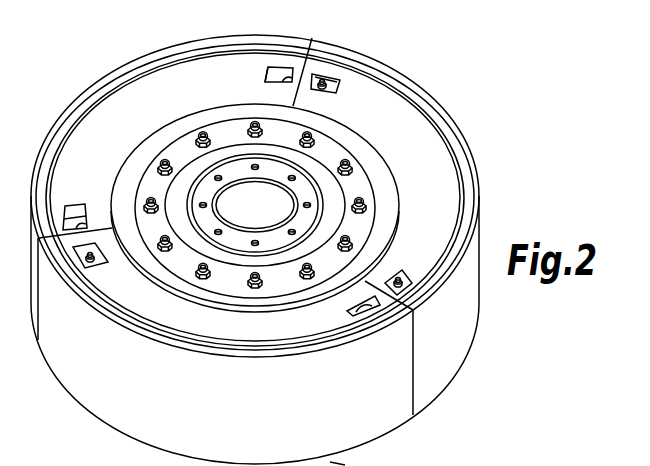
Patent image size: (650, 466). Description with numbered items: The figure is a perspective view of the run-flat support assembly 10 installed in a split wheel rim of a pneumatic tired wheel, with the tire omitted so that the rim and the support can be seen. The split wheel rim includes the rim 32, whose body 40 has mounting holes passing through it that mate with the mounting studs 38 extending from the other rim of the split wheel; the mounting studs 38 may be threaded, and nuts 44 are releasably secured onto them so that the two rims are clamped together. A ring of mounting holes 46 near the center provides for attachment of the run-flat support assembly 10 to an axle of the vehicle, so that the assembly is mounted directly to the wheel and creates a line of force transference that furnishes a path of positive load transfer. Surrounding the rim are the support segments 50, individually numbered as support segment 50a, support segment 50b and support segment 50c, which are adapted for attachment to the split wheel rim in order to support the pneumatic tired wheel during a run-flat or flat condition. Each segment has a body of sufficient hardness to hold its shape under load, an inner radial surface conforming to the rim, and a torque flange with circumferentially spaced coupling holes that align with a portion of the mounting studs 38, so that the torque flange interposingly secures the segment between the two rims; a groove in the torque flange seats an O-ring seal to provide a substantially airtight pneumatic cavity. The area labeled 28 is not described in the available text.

The run-flat support assembly 10 is at (519, 62).
The housing 28 is at (347, 115).
The rim 32 is at (372, 145).
The mounting studs 38 is at (358, 200).
The body 40 is at (352, 463).
The nuts 44 is at (368, 213).
The mounting holes 46 is at (210, 173).
The support segments 50 is at (466, 370).
The support segment 50a is at (137, 59).
The support segment 50b is at (468, 147).
The support segment 50c is at (110, 428).